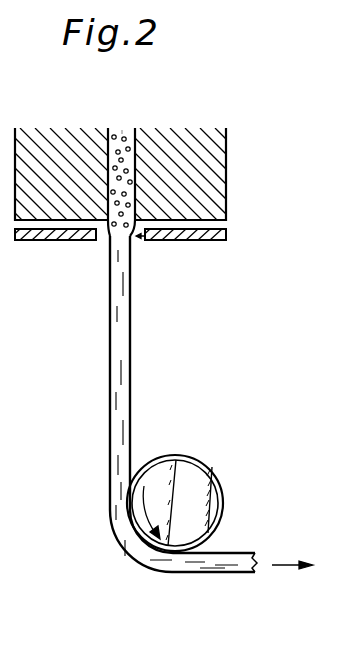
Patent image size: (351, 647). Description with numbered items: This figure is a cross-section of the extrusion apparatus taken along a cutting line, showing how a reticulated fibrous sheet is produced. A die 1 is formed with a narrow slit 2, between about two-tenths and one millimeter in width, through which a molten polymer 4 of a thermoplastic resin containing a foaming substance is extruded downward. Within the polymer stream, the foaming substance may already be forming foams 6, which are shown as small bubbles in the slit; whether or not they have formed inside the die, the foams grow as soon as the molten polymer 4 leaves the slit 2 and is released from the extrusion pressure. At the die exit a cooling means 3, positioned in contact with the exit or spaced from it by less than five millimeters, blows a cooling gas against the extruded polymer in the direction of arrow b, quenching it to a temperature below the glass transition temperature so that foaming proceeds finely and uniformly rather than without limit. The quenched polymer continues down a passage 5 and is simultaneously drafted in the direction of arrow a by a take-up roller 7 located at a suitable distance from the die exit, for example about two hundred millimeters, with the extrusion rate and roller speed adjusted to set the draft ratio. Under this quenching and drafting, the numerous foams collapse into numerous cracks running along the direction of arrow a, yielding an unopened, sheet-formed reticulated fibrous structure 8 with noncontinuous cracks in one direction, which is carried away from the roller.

The die 1 is at (214, 170).
The slit 2 is at (118, 214).
The cooling means 3 is at (184, 240).
The molten polymer 4 is at (127, 132).
The tube / conduit 5 is at (120, 343).
The foams 6 is at (117, 129).
The take-up roller 7 is at (198, 478).
The reticulated fibrous structure 8 is at (216, 572).
The drafting direction arrow a is at (97, 306).
The cooling gas direction arrow b is at (109, 234).